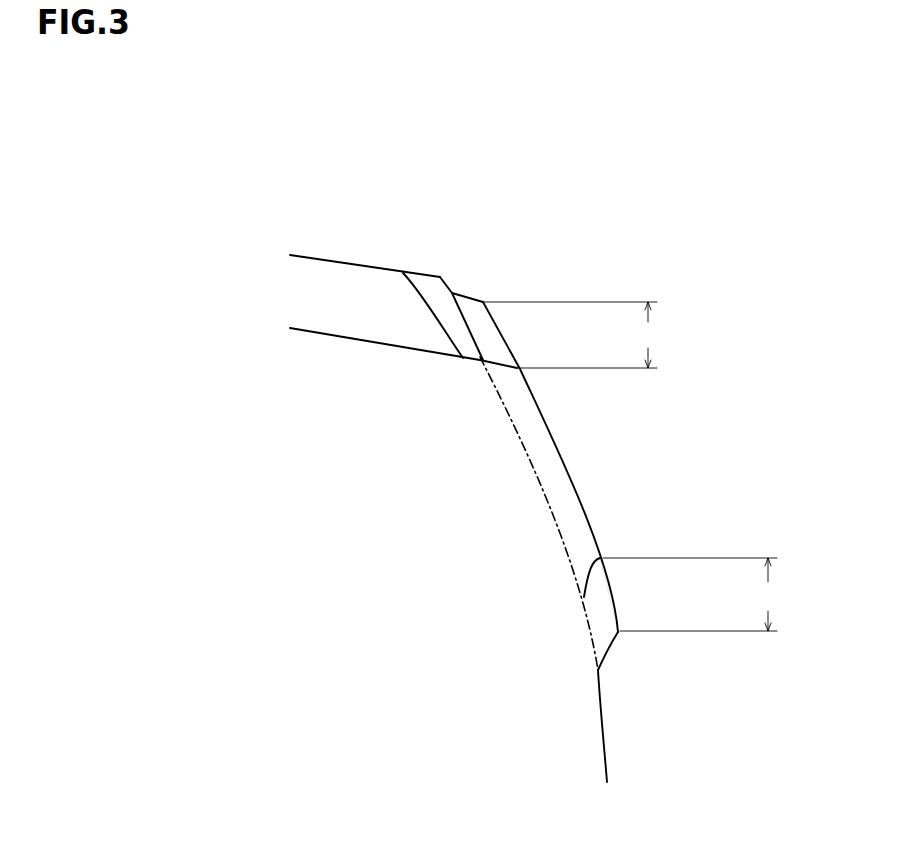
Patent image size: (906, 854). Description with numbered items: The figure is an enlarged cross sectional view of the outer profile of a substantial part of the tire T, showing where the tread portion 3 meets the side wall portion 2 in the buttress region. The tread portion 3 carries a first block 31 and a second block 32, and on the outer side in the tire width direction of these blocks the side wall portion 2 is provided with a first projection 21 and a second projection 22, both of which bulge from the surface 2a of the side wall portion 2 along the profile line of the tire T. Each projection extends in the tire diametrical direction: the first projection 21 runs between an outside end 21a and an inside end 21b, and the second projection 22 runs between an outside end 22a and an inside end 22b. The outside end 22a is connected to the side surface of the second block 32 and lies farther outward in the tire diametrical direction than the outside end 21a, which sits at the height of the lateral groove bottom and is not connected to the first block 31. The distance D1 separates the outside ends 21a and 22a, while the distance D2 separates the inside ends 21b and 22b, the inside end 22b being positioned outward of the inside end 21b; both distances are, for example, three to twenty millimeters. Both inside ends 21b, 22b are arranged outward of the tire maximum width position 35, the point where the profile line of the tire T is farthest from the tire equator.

The tread portion 3 is at (363, 259).
The first block 31 is at (328, 257).
The second block 32 is at (423, 272).
The side wall portion 2 is at (601, 495).
The surface of the side wall portion 2a is at (563, 523).
The first projection 21 is at (657, 620).
The outside end of the first projection 21a is at (512, 365).
The inside end of the first projection 21b is at (608, 647).
The second projection 22 is at (583, 420).
The outside end of the second projection 22a is at (475, 293).
The inside end of the second projection 22b is at (592, 579).
The tire maximum width position 35 is at (608, 782).
The tire T is at (328, 618).
The distance D1 is at (576, 335).
The distance D2 is at (695, 594).